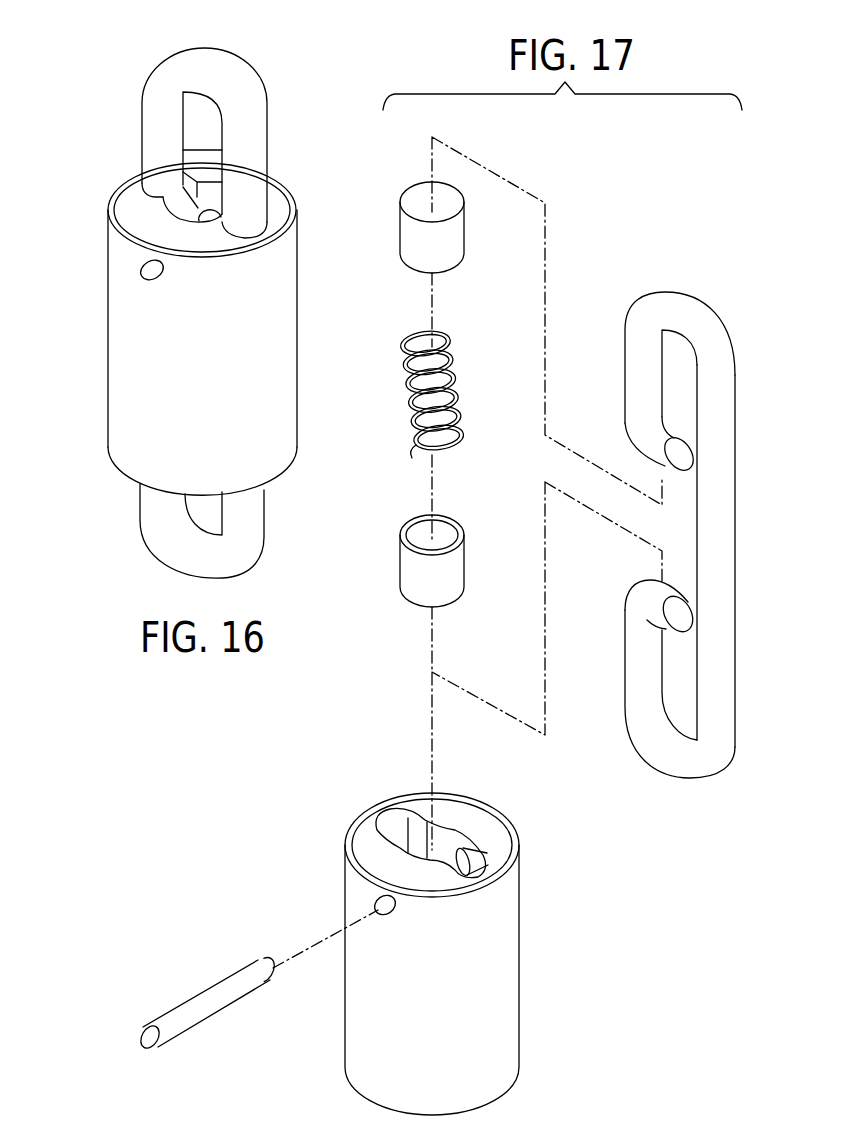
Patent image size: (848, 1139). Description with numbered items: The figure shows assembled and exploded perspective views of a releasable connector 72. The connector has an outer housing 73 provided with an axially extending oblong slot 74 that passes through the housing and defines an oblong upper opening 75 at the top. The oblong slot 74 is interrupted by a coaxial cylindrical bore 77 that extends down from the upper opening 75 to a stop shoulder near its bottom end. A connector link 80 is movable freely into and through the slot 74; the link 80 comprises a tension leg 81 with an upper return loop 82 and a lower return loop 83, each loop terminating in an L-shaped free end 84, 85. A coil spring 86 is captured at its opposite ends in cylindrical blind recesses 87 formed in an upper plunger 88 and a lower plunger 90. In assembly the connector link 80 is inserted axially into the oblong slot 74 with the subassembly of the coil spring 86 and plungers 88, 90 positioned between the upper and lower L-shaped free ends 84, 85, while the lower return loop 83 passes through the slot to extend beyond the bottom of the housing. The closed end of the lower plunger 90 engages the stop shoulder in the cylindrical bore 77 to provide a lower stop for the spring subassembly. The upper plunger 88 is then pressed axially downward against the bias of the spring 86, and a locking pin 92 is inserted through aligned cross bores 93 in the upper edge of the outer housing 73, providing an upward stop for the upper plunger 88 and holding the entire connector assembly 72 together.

In FIG. 16, the connector 72 is at (281, 147).
In FIG. 16, the outer housing 73 is at (118, 385).
In FIG. 17, the outer housing 73 is at (497, 937).
In FIG. 16, the oblong slot 74 is at (253, 226).
In FIG. 17, the oblong slot 74 is at (403, 820).
In FIG. 16, the upper opening 75 is at (148, 186).
In FIG. 17, the upper opening 75 is at (390, 820).
In FIG. 16, the cylindrical bore 77 is at (210, 192).
In FIG. 17, the cylindrical bore 77 is at (453, 830).
In FIG. 16, the connector link 80 is at (250, 508).
In FIG. 17, the connector link 80 is at (723, 557).
In FIG. 17, the tension leg 81 is at (717, 482).
In FIG. 16, the upper return loop 82 is at (155, 78).
In FIG. 17, the upper return loop 82 is at (685, 318).
In FIG. 16, the lower return loop 83 is at (178, 547).
In FIG. 17, the lower return loop 83 is at (657, 742).
In FIG. 17, the L-shaped free end 84 is at (663, 443).
In FIG. 17, the L-shaped free end 85 is at (678, 618).
In FIG. 17, the coil spring 86 is at (457, 392).
In FIG. 17, the cylindrical blind recess 87 is at (415, 530).
In FIG. 17, the upper plunger 88 is at (407, 225).
In FIG. 17, the lower plunger 90 is at (407, 572).
In FIG. 17, the locking pin 92 is at (197, 1000).
In FIG. 16, the cross bores 93 is at (147, 277).
In FIG. 17, the cross bores 93 is at (397, 912).